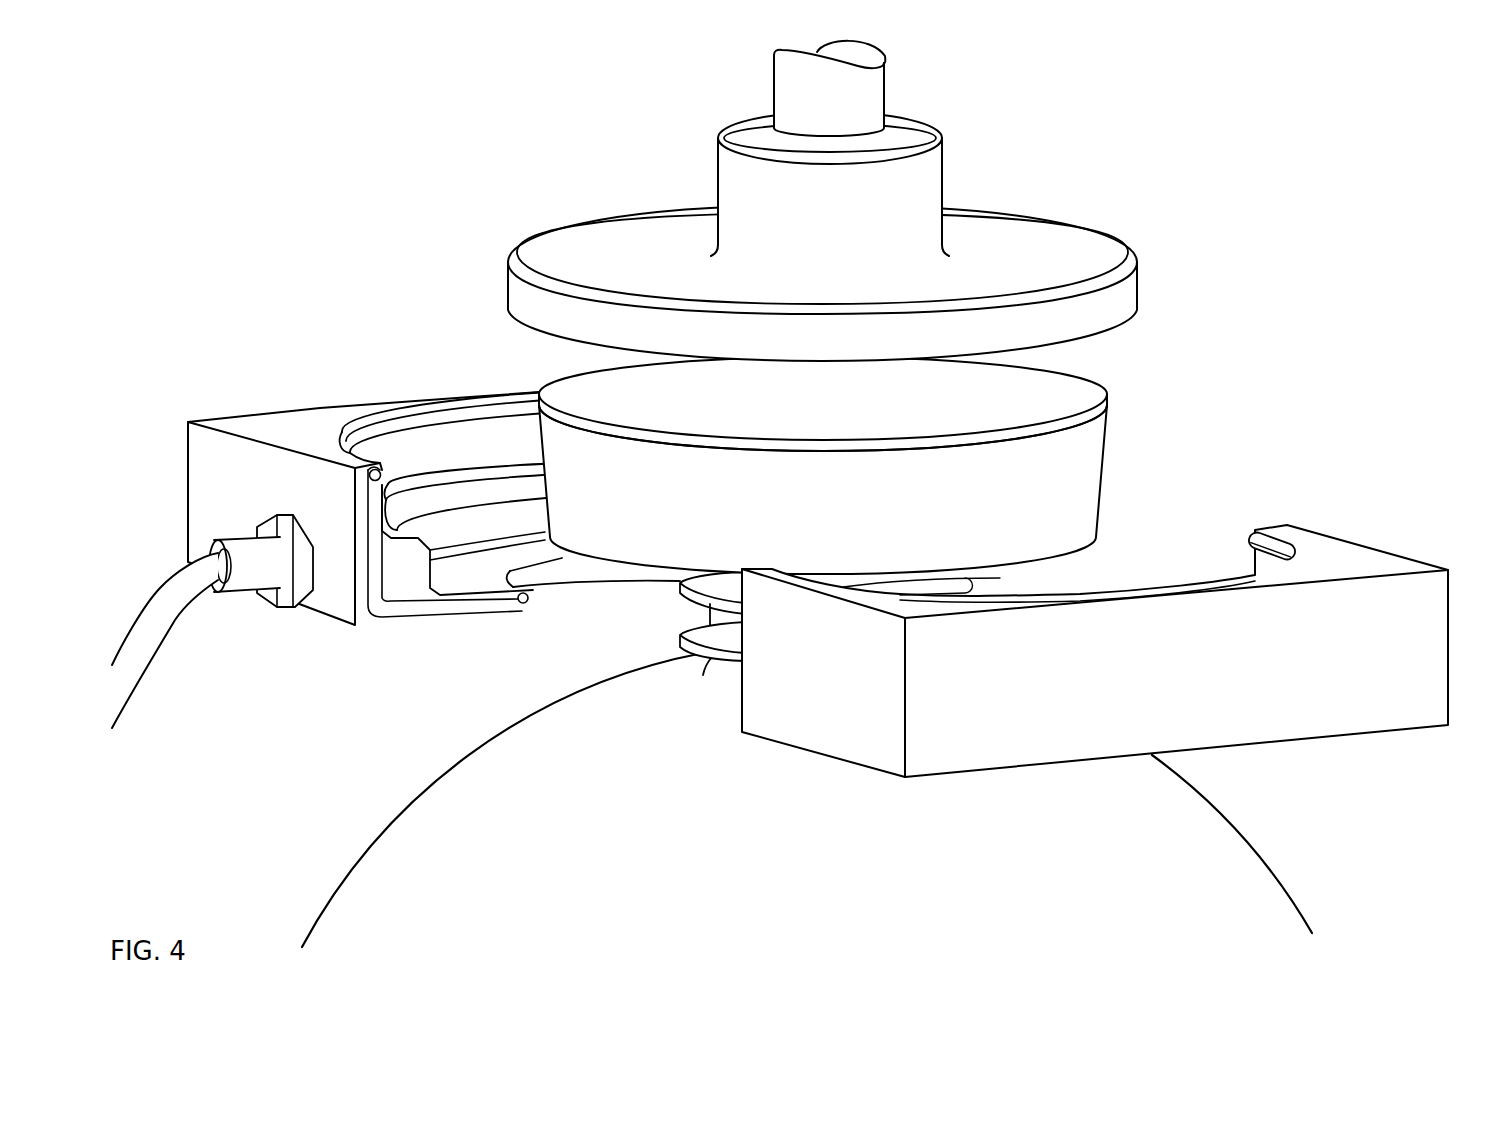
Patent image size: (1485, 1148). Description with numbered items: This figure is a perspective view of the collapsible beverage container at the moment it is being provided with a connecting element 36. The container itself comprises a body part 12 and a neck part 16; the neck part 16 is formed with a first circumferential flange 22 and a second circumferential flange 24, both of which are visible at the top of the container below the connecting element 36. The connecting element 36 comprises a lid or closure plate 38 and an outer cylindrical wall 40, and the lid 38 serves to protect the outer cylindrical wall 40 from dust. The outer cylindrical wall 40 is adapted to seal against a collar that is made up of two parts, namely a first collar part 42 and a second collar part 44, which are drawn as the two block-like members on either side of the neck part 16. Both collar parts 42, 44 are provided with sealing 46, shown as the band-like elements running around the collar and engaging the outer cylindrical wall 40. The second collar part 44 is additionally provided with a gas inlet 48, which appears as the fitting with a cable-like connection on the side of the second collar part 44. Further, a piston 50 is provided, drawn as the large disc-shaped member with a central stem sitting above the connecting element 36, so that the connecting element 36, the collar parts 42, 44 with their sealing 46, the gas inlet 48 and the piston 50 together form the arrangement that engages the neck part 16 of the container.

The body part 12 is at (422, 862).
The neck part 16 is at (645, 626).
The first circumferential flange 22 is at (680, 588).
The second circumferential flange 24 is at (710, 649).
The connecting element 36 is at (1140, 395).
The lid or closure plate 38 is at (1067, 397).
The outer cylindrical wall 40 is at (1103, 440).
The first collar part 42 is at (1354, 555).
The second collar part 44 is at (309, 427).
The sealing 46 is at (387, 430).
The gas inlet 48 is at (239, 537).
The piston 50 is at (1006, 242).